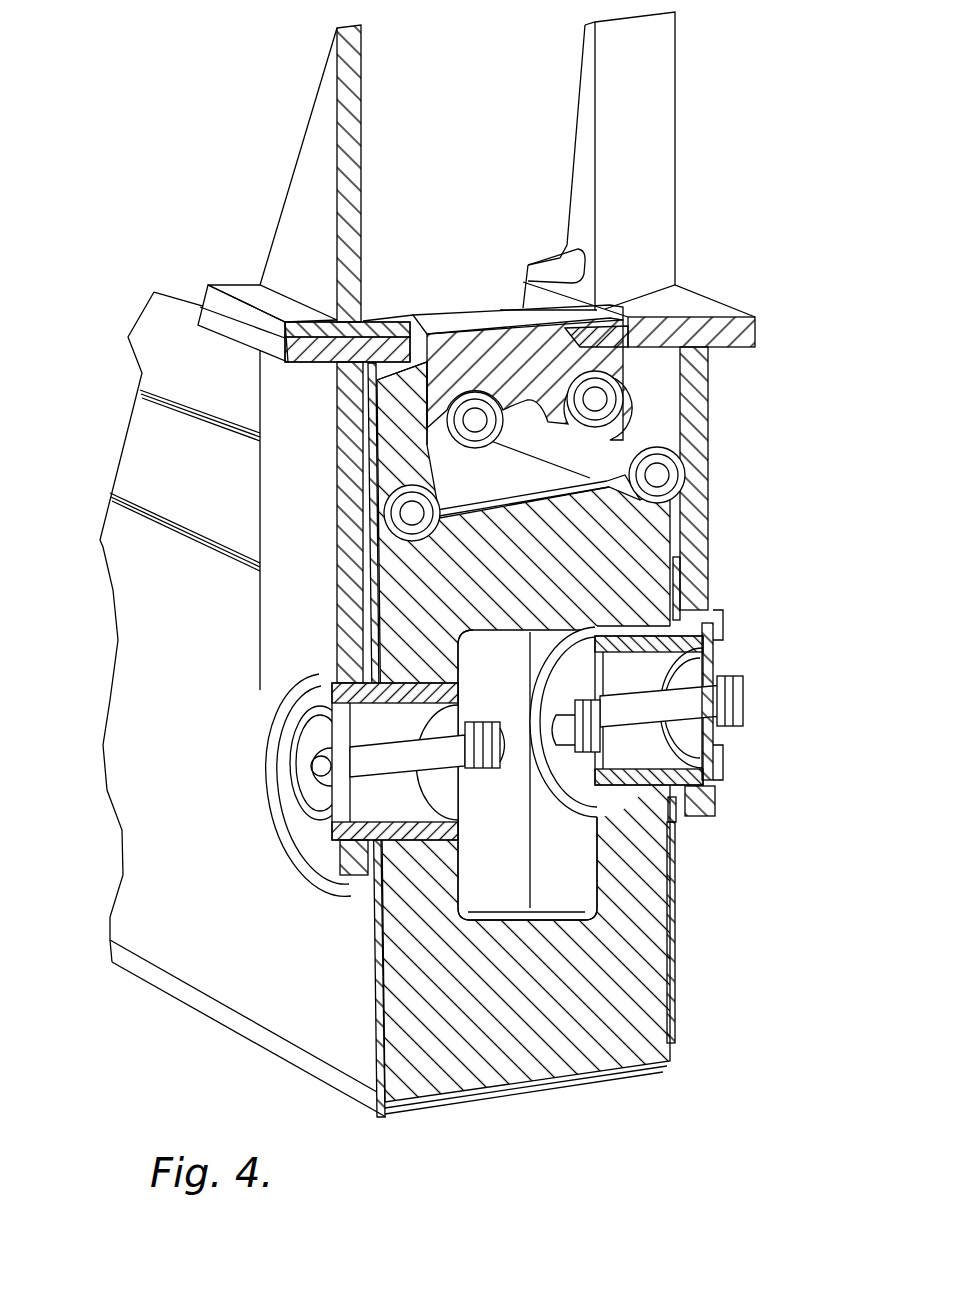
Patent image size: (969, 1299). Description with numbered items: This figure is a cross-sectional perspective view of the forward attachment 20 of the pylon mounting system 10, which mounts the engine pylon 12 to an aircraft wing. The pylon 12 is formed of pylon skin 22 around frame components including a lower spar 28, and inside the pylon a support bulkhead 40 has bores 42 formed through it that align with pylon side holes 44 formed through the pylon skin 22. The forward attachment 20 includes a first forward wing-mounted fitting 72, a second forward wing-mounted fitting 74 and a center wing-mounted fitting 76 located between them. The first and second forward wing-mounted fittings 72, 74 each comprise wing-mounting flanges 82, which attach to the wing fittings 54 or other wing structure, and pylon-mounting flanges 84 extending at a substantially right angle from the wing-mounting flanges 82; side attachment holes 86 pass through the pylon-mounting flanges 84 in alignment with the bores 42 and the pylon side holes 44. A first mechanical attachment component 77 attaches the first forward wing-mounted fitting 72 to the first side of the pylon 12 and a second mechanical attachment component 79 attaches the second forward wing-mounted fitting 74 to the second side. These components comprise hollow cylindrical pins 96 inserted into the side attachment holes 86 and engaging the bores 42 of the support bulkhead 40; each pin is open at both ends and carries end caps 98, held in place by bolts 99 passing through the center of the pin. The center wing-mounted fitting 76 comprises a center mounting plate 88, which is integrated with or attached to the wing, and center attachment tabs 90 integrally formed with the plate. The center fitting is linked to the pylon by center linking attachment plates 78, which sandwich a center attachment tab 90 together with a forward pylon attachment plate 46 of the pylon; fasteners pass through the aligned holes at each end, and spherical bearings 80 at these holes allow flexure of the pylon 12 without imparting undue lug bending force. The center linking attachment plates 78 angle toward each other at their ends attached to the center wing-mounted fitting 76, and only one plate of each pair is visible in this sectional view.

The pylon mounting system 10 is at (238, 122).
The engine pylon 12 is at (127, 683).
The forward attachment 20 is at (760, 468).
The pylon skin 22 is at (678, 918).
The lower spar 28 is at (150, 328).
The support bulkhead 40 is at (480, 1054).
The bores 42 is at (416, 846).
The pylon side holes 44 is at (673, 805).
The forward pylon attachment plates 46 is at (384, 461).
The wing fittings 54 is at (330, 155).
The first forward wing-mounted fitting 72 is at (272, 481).
The second forward wing-mounted fitting 74 is at (710, 363).
The center wing-mounted fitting 76 is at (418, 314).
The first mechanical attachment component 77 is at (326, 795).
The center linking attachment plates 78 is at (382, 435).
The second mechanical attachment component 79 is at (713, 742).
The spherical bearings 80 is at (467, 418).
The wing-mounting flanges 82 is at (237, 328).
The pylon-mounting flanges 84 is at (272, 584).
The side attachment holes 86 is at (378, 684).
The center mounting plate 88 is at (506, 305).
The center attachment tabs 90 is at (606, 340).
The pins 96 is at (670, 786).
The end caps 98 is at (330, 727).
The bolts 99 is at (712, 708).